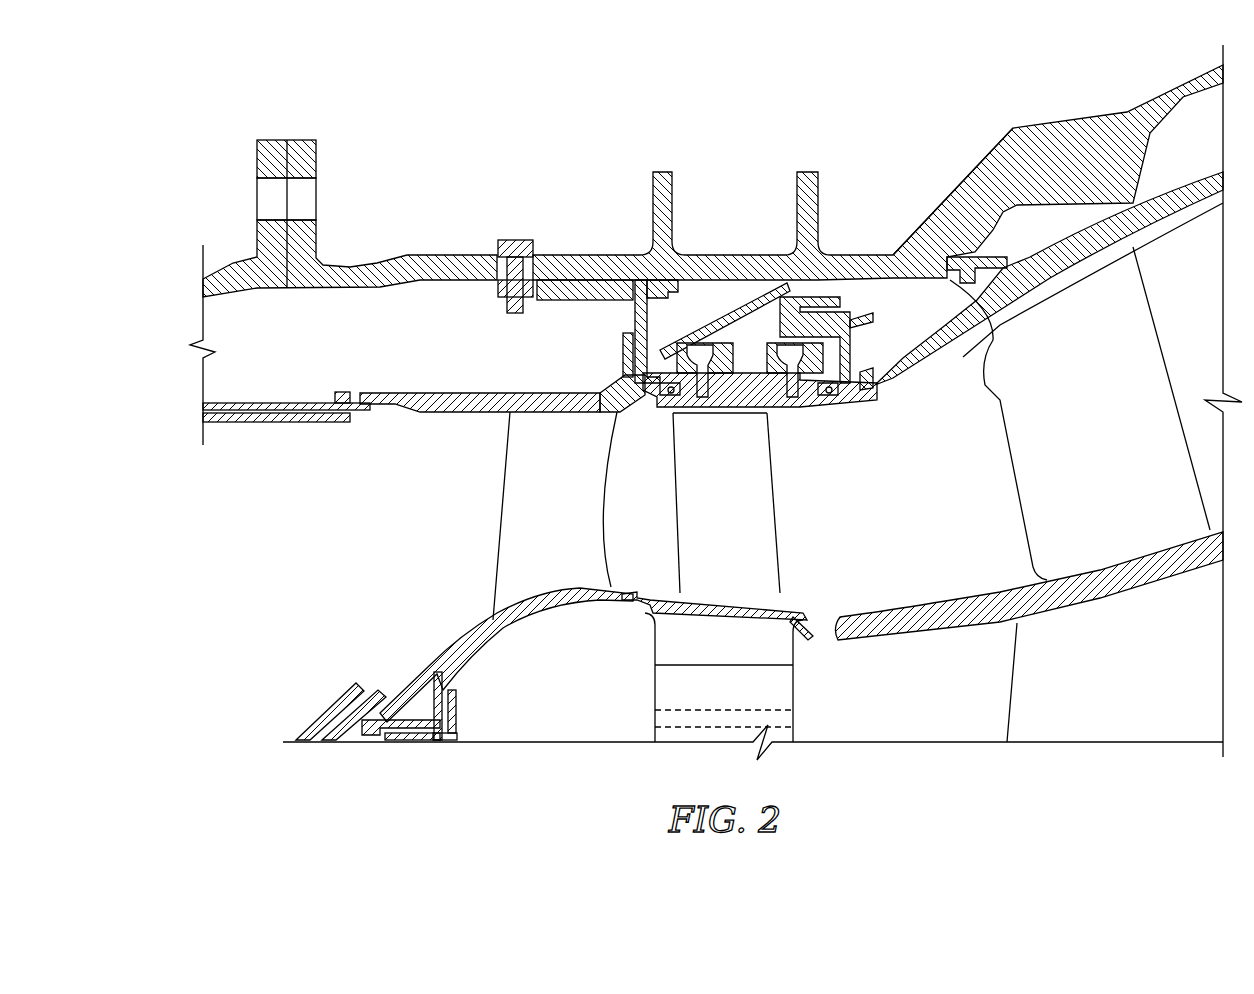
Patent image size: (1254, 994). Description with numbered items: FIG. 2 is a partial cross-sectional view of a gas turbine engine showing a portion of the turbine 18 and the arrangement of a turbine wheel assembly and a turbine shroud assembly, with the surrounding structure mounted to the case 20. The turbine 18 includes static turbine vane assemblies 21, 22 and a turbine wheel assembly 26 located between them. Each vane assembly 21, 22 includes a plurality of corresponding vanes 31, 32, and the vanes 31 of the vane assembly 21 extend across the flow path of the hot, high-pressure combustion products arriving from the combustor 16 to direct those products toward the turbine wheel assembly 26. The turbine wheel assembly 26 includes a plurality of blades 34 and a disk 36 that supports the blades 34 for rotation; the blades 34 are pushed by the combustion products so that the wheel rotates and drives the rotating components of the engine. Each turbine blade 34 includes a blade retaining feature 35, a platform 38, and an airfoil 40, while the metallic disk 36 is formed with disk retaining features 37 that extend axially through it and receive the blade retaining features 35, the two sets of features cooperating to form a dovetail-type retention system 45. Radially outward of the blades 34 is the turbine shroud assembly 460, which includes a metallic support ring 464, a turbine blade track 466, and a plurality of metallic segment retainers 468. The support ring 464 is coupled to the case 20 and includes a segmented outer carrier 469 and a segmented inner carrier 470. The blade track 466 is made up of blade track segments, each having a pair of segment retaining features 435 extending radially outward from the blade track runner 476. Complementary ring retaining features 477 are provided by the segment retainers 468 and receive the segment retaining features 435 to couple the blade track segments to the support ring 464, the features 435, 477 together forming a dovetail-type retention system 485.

The combustor 16 is at (270, 417).
The turbine 18 is at (595, 228).
The case 20 is at (845, 258).
The static turbine vane assembly 21 is at (500, 504).
The static turbine vane assembly 22 is at (1017, 507).
The turbine wheel assembly 26 is at (790, 583).
The vanes 31 is at (537, 532).
The vanes 32 is at (1083, 527).
The turbine blades 34 is at (787, 557).
The blade retaining feature 35 is at (680, 690).
The disk 36 is at (778, 733).
The disk retaining features 37 is at (680, 720).
The platform 38 is at (623, 618).
The airfoil 40 is at (703, 553).
The dovetail-type retention system 45 is at (797, 715).
The segment retaining features 435 is at (645, 397).
The turbine shroud assembly 460 is at (872, 350).
The support ring 464 is at (899, 262).
The turbine blade track 466 is at (803, 413).
The segment retainers 468 is at (738, 330).
The outer carrier 469 is at (633, 313).
The inner carrier 470 is at (660, 381).
The blade track runner 476 is at (818, 413).
The ring retaining features 477 is at (775, 385).
The dovetail-type retention system 485 is at (730, 317).